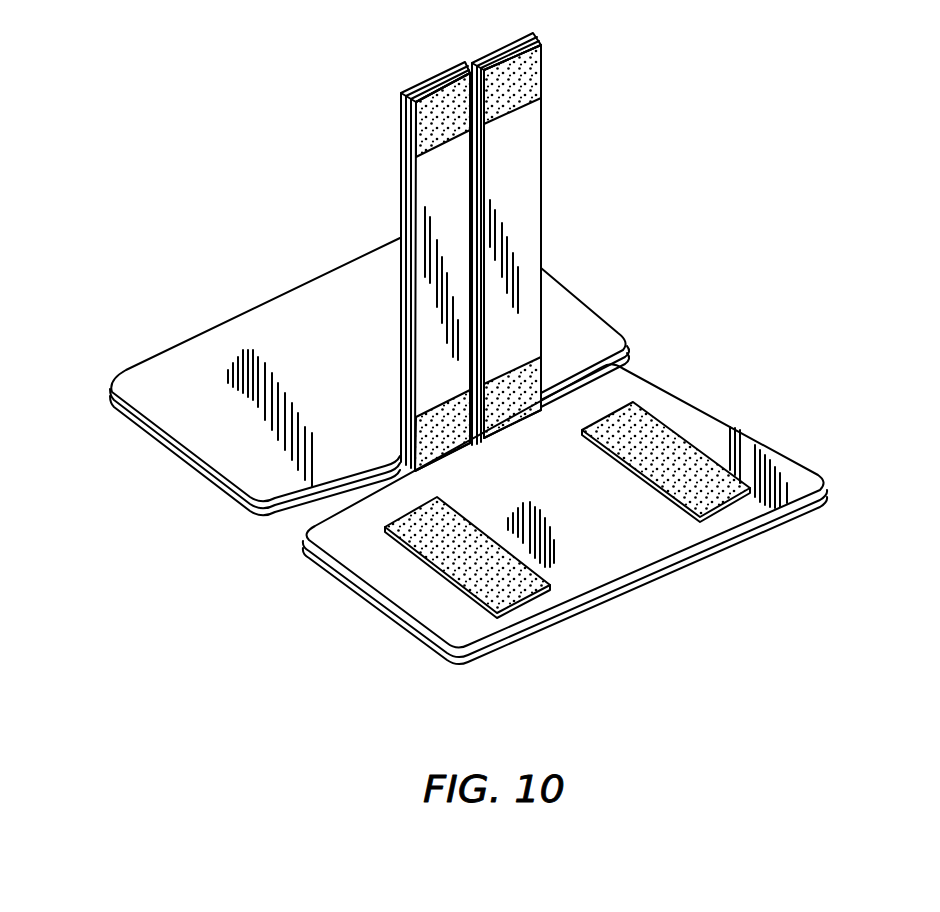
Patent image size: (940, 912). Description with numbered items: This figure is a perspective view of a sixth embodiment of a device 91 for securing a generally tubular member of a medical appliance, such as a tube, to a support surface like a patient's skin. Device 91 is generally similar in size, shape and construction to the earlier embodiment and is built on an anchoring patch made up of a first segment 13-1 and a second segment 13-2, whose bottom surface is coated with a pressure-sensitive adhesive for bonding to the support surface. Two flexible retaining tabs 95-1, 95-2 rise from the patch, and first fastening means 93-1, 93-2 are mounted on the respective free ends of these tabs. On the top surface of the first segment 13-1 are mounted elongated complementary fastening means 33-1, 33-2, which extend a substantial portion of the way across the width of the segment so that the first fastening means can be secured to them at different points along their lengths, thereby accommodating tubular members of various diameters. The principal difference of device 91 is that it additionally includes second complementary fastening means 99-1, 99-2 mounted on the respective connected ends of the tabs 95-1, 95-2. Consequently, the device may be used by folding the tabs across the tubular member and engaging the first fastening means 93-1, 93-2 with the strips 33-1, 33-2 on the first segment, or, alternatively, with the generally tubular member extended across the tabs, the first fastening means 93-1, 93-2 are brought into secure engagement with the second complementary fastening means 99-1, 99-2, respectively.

The device 91 is at (205, 127).
The first segment 13-1 is at (757, 430).
The second segment 13-2 is at (560, 278).
The complementary fastening means 33-1 is at (442, 517).
The complementary fastening means 33-2 is at (690, 486).
The flexible retaining tab 95-1 is at (400, 279).
The flexible retaining tab 95-2 is at (541, 163).
The first fastening means 93-1 is at (433, 108).
The first fastening means 93-2 is at (528, 78).
The second complementary fastening means 99-1 is at (433, 423).
The second complementary fastening means 99-2 is at (508, 378).